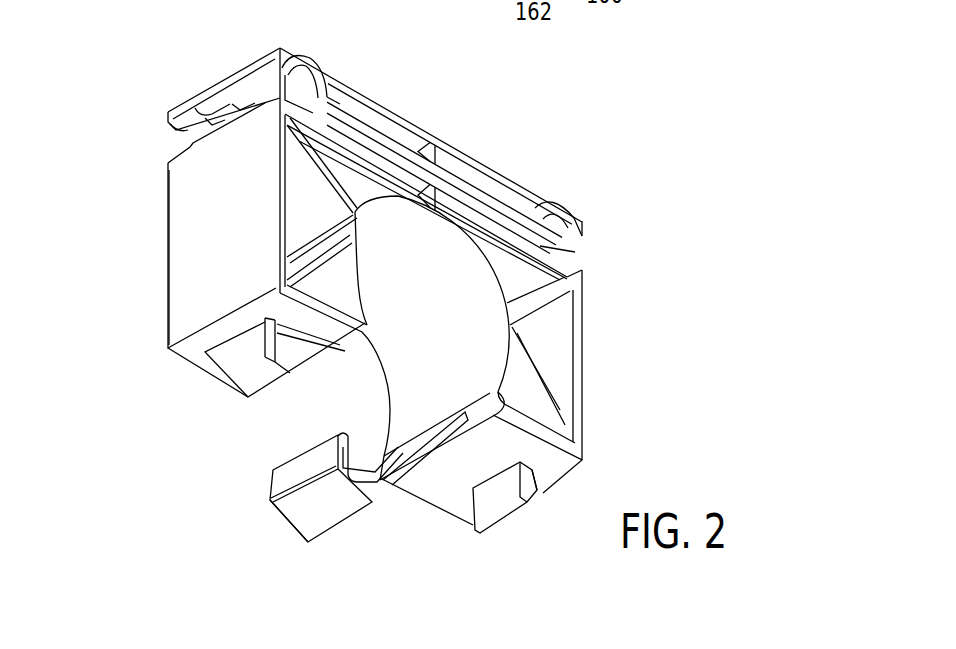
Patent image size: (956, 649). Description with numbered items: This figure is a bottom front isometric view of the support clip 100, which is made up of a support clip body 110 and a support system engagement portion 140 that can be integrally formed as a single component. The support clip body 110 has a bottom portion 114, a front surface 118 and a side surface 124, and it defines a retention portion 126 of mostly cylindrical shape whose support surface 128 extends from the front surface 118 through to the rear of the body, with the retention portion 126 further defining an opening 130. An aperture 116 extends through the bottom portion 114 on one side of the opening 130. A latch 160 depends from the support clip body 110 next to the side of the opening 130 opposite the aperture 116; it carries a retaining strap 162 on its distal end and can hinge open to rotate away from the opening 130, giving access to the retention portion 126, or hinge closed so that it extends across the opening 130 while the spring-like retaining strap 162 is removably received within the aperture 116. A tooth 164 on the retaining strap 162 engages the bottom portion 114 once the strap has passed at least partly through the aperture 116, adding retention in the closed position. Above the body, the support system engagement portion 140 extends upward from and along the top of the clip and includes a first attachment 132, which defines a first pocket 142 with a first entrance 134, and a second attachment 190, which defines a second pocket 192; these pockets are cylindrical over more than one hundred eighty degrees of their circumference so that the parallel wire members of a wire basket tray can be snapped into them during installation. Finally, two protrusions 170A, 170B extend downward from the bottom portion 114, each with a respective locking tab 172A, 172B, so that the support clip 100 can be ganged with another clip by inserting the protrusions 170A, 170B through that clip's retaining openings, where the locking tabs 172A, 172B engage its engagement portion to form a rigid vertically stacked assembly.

The support clip 100 is at (730, 156).
The support clip body 110 is at (133, 182).
The bottom portion 114 is at (456, 480).
The aperture 116 is at (297, 363).
The front surface 118 is at (588, 283).
The side surface 124 is at (195, 255).
The retention portion 126 is at (470, 333).
The support surface 128 is at (445, 290).
The opening 130 is at (470, 363).
The first attachment 132 is at (150, 86).
The first entrance 134 is at (178, 130).
The support system engagement portion 140 is at (458, 130).
The first pocket 142 is at (290, 90).
The latch 160 is at (353, 532).
The retaining strap 162 is at (300, 518).
The tooth 164 is at (300, 512).
The protrusion 170A is at (500, 508).
The protrusion 170B is at (233, 362).
The locking tab 172A is at (565, 497).
The locking tab 172B is at (218, 345).
The second attachment 190 is at (628, 240).
The second pocket 192 is at (556, 215).